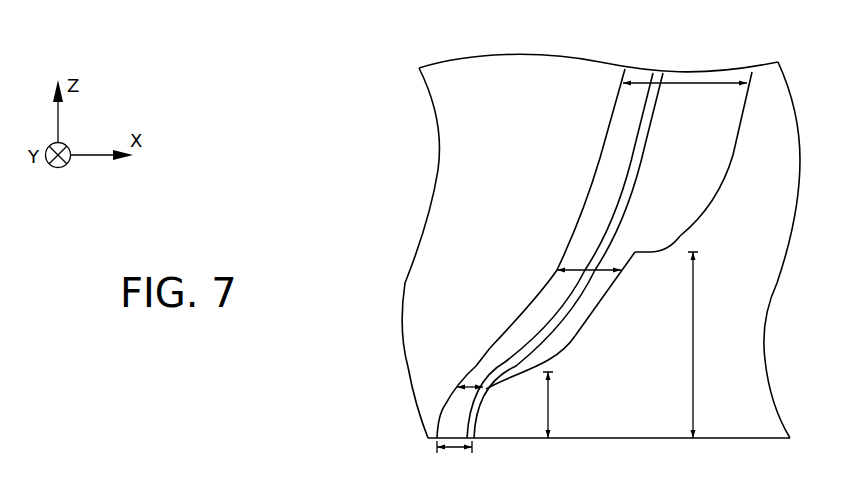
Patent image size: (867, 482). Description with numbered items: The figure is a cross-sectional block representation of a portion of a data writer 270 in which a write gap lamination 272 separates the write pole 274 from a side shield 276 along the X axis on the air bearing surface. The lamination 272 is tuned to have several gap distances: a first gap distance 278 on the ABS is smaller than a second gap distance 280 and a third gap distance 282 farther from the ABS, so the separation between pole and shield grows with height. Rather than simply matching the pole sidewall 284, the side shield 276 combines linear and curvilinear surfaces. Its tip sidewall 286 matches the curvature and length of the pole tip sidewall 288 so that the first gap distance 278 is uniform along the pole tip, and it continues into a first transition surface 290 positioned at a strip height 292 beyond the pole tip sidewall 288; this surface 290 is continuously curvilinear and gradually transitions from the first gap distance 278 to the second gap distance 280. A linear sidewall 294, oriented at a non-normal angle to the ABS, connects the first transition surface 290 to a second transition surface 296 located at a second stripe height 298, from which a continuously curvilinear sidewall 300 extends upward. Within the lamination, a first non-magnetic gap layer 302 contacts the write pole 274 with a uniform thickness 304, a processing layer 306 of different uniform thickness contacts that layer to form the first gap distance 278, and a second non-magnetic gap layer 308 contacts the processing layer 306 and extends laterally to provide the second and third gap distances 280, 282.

The data writer 270 is at (752, 42).
The write gap lamination 272 is at (598, 154).
The write pole 274 is at (543, 88).
The side shield 276 is at (774, 433).
The first gap distance 278 is at (454, 457).
The second gap distance 280 is at (557, 268).
The third gap distance 282 is at (685, 93).
The pole sidewall 284 is at (515, 327).
The tip sidewall 286 is at (478, 410).
The pole tip sidewall 288 is at (443, 412).
The first transition surface 290 is at (517, 373).
The strip height 292 is at (565, 405).
The linear sidewall 294 is at (582, 328).
The second transition surface 296 is at (657, 253).
The second stripe height 298 is at (710, 345).
The curvilinear sidewall 300 is at (727, 170).
The first non-magnetic gap layer 302 is at (483, 356).
The uniform thickness 304 is at (470, 385).
The processing layer 306 is at (658, 134).
The second non-magnetic gap layer 308 is at (686, 193).